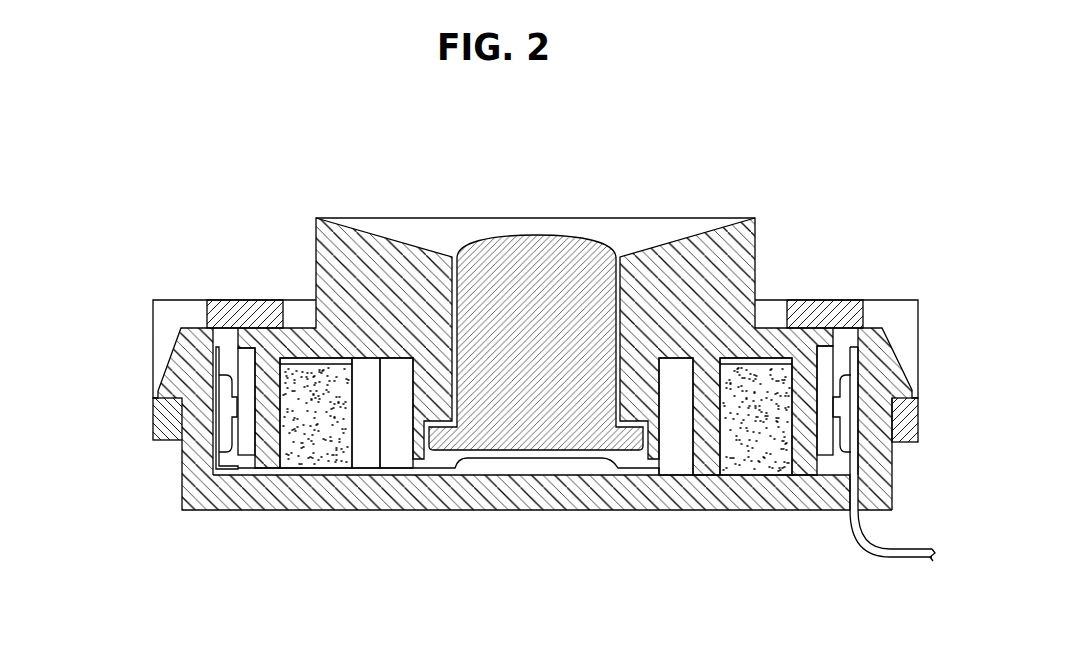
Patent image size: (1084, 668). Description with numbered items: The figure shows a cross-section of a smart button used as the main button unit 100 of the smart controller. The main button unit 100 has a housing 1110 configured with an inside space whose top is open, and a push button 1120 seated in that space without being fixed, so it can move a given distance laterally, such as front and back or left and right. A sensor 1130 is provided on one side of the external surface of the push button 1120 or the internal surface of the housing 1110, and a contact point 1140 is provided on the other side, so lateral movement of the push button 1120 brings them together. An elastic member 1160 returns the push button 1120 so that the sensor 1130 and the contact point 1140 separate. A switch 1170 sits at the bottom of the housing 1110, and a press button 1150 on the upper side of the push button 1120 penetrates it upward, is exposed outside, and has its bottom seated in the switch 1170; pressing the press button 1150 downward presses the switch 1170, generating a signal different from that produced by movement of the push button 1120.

The main button unit 100 is at (290, 123).
The housing 1110 is at (203, 497).
The push button 1120 is at (707, 245).
The sensor 1130 is at (217, 420).
The contact point 1140 is at (247, 365).
The press button 1150 is at (533, 258).
The elastic member 1160 is at (318, 460).
The switch 1170 is at (550, 468).